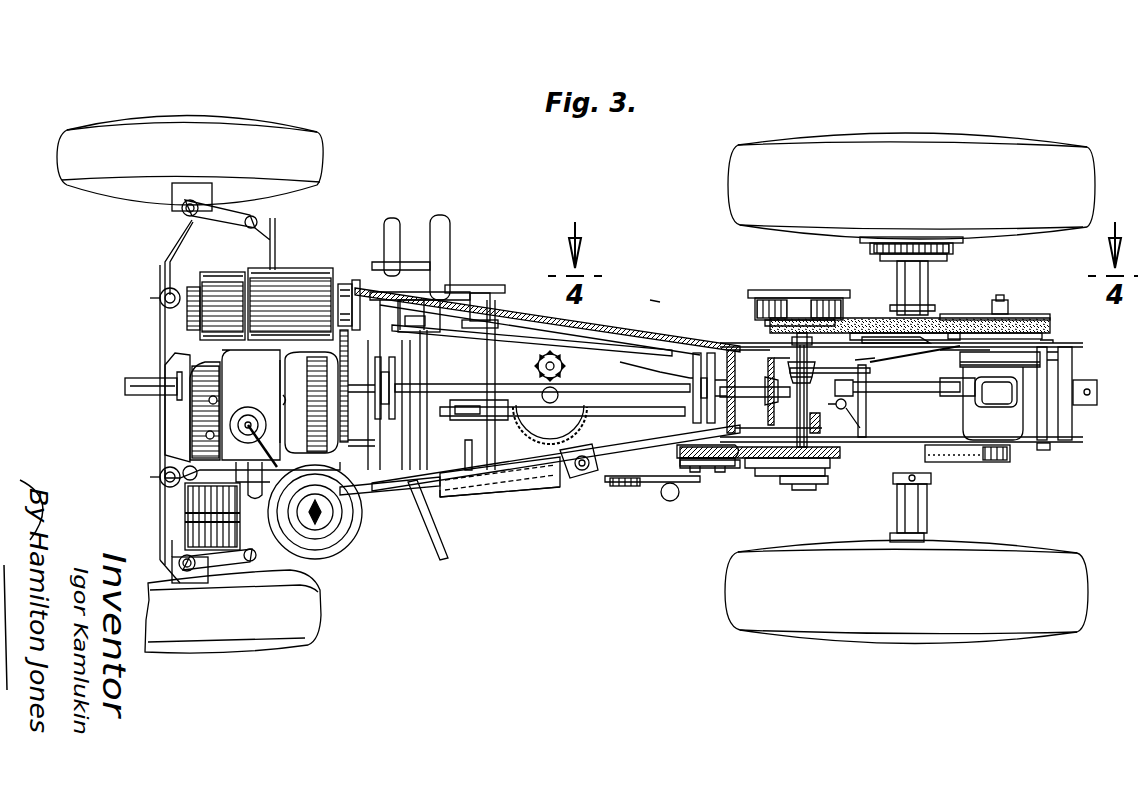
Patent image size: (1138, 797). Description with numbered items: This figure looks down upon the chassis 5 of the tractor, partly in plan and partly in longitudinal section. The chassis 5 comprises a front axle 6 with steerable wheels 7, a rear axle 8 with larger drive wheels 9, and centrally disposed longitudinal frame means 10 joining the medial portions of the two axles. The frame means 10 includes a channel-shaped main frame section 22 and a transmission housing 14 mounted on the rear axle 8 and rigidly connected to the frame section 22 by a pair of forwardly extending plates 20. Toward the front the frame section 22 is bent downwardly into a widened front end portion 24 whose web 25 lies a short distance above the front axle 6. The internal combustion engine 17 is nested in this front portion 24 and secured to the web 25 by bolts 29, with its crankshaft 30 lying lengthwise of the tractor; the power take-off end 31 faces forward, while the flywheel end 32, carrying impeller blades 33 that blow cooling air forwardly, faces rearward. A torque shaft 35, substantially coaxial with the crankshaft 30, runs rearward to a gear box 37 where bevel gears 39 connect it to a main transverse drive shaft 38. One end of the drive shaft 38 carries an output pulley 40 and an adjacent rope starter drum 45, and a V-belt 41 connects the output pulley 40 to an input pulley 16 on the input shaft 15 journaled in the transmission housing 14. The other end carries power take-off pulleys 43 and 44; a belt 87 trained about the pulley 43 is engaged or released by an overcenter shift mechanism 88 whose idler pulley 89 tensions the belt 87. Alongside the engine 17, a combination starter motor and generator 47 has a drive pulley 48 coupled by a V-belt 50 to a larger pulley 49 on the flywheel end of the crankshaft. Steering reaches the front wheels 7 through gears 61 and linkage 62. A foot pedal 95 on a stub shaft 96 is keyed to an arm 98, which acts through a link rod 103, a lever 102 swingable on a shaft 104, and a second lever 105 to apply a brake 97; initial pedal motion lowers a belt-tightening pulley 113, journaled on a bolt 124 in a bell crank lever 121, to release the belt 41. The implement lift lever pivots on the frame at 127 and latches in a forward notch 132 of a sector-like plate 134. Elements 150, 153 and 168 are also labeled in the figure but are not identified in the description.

The chassis 5 is at (666, 302).
The front axle 6 is at (160, 269).
The steerable wheels 7 is at (262, 133).
The rear axle 8 is at (915, 284).
The drive wheels 9 is at (936, 150).
The longitudinal frame means 10 is at (618, 334).
The transmission housing 14 is at (1016, 435).
The input shaft 15 is at (1000, 303).
The input pulley 16 is at (1052, 318).
The internal combustion engine 17 is at (187, 420).
The forwardly extending plates 20 is at (778, 347).
The channel-shaped main frame section 22 is at (692, 340).
The front end portion 24 is at (356, 305).
The web 25 is at (370, 490).
The bolts 29 is at (183, 322).
The crankshaft 30 is at (145, 378).
The power take-off end 31 is at (134, 390).
The flywheel end 32 is at (300, 383).
The impeller blades 33 is at (350, 350).
The torque shaft 35 is at (515, 384).
The gear box 37 is at (770, 442).
The main transverse drive shaft 38 is at (800, 398).
The bevel gears 39 is at (740, 340).
The output pulley 40 is at (762, 318).
The V-belt 41 is at (938, 318).
The power take-off pulley 43 is at (772, 472).
The power take-off pulley 44 is at (812, 476).
The rope starter drum 45 is at (800, 290).
The combination electric starter motor and generator 47 is at (285, 276).
The drive pulley 48 is at (345, 285).
The larger pulley 49 is at (350, 445).
The V-belt 50 is at (353, 350).
The gears 61 is at (567, 370).
The linkage 62 is at (576, 490).
The belt 87 is at (728, 446).
The overcenter type shift mechanism 88 is at (658, 510).
The idler pulley 89 is at (678, 458).
The foot pedal 95 is at (392, 222).
The stub shaft 96 is at (430, 240).
The brake 97 is at (958, 455).
The arm 98 is at (410, 350).
The lever 102 is at (942, 352).
The link rod 103 is at (530, 335).
The shaft 104 is at (874, 404).
The second lever 105 is at (890, 472).
The belt-tightening pulley 113 is at (890, 318).
The bell crank lever 121 is at (924, 310).
The bolt 124 is at (862, 312).
The pivot 127 is at (490, 432).
The forward notch 132 is at (484, 497).
The sector-like plate 134 is at (530, 490).
The shaft 150 is at (616, 414).
The clevis 153 is at (456, 411).
The bracket 168 is at (1092, 405).